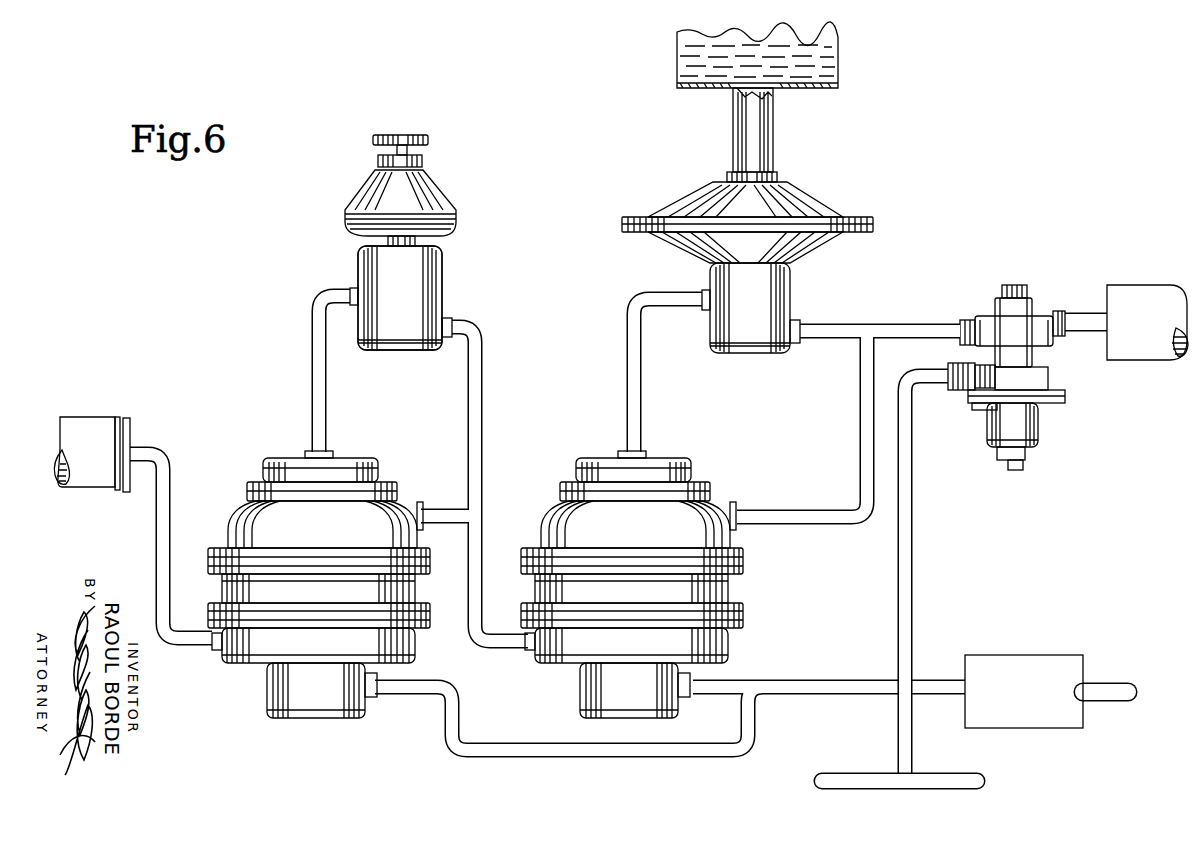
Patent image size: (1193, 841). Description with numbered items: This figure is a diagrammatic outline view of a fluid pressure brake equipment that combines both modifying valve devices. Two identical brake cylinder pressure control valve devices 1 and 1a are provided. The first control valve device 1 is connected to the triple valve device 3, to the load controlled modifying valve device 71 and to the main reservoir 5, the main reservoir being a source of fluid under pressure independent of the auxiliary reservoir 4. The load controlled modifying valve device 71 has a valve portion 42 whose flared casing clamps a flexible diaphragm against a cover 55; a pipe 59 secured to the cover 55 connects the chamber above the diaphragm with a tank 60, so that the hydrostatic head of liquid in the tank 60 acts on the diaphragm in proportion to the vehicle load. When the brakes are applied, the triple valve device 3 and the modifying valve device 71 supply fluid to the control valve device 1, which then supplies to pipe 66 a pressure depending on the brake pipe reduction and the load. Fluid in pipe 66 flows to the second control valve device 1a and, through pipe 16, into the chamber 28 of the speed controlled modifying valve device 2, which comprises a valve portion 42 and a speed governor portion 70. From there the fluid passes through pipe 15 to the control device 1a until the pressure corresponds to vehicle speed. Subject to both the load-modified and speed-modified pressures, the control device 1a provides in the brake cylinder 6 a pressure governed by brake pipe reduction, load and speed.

The brake cylinder pressure control valve device 1 is at (581, 455).
The brake cylinder pressure control valve device 1a is at (280, 460).
The speed controlled brake cylinder pressure modifying valve device 2 is at (404, 242).
The triple valve device 3 is at (1040, 428).
The auxiliary reservoir 4 is at (1147, 358).
The main reservoir 5 is at (1038, 657).
The brake cylinder 6 is at (100, 418).
The pipe 15 is at (625, 330).
The pipe 16 is at (860, 387).
The chamber 28 is at (857, 775).
The valve portion 42 is at (413, 352).
The cover 55 is at (829, 206).
The pipe 59 is at (775, 140).
The tank 60 is at (802, 88).
The pipe 66 is at (479, 514).
The speed governor portion 70 is at (436, 182).
The load controlled brake cylinder pressure modifying valve device 71 is at (672, 248).